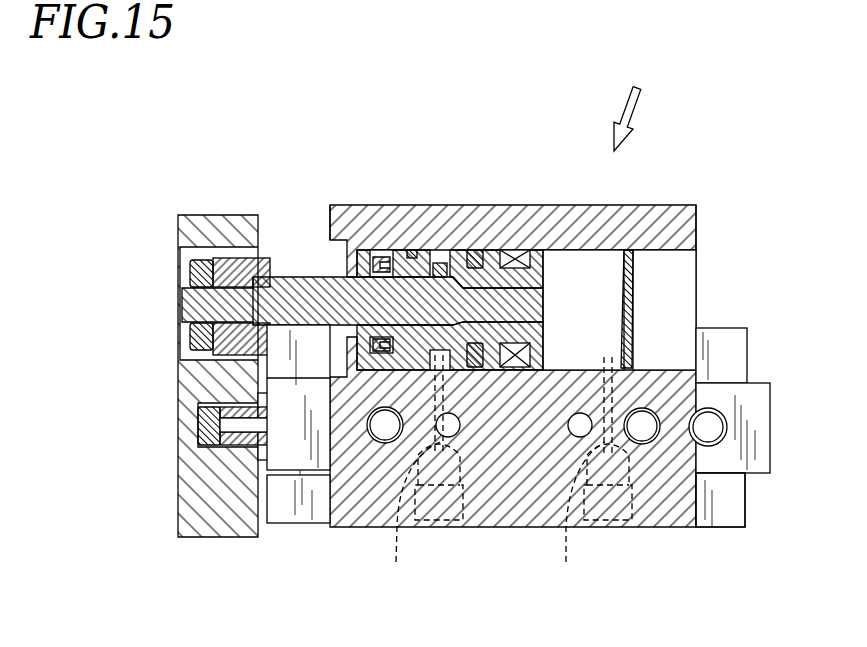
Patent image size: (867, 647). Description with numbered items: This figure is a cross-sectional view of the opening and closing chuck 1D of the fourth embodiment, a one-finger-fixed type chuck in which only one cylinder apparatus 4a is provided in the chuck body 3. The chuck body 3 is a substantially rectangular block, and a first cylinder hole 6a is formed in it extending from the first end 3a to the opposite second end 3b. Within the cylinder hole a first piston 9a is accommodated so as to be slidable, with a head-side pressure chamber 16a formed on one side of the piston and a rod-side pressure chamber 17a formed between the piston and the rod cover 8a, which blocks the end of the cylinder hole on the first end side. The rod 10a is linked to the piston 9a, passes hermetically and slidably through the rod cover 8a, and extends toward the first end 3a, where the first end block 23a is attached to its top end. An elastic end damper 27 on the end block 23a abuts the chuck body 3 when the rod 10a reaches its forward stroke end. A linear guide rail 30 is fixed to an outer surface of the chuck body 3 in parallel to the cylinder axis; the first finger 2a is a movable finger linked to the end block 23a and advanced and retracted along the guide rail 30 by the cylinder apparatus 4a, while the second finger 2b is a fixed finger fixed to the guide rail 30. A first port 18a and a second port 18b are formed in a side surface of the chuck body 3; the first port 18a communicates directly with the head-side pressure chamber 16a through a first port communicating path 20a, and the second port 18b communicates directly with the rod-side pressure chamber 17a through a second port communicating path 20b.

The opening and closing chuck 1D is at (633, 98).
The first finger 2a is at (317, 513).
The second finger 2b is at (710, 518).
The chuck body 3 is at (672, 220).
The first end 3a is at (313, 205).
The second end 3b is at (700, 237).
The first cylinder apparatus 4a is at (478, 233).
The first cylinder hole 6a is at (668, 250).
The rod cover 8a is at (392, 255).
The first piston 9a is at (493, 247).
The first rod 10a is at (300, 300).
The first head-side pressure chamber 16a is at (563, 273).
The first rod-side pressure chamber 17a is at (443, 252).
The first port 18a is at (607, 522).
The second port 18b is at (440, 522).
The first port communicating path 20a is at (574, 521).
The second port communicating path 20b is at (407, 520).
The first end block 23a is at (210, 228).
The end damper 27 is at (210, 430).
The guide rail 30 is at (287, 457).